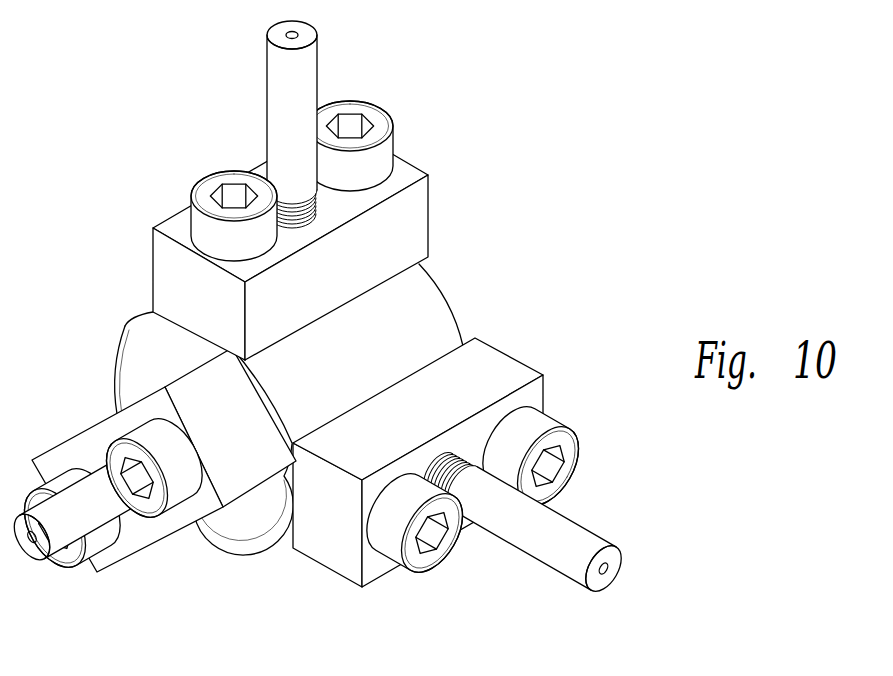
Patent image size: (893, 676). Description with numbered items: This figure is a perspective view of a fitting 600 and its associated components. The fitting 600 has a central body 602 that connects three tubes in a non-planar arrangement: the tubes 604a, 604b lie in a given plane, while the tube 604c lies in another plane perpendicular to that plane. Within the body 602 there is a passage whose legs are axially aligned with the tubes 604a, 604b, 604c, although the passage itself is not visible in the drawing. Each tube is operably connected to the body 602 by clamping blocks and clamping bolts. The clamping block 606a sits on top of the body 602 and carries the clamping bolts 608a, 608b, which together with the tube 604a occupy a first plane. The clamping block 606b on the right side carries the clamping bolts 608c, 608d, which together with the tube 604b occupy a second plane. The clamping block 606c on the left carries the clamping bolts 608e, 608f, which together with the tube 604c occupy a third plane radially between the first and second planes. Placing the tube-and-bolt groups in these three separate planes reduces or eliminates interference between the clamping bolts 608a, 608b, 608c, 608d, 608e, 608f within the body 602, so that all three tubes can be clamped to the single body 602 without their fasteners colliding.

The fitting 600 is at (346, 335).
The body 602 is at (430, 307).
The tube 604a is at (312, 67).
The tube 604b is at (580, 537).
The tube 604c is at (63, 538).
The clamping block 606a is at (158, 272).
The clamping block 606b is at (510, 368).
The clamping block 606c is at (100, 433).
The clamping bolt 608a is at (203, 183).
The clamping bolt 608b is at (383, 125).
The clamping bolt 608c is at (424, 563).
The clamping bolt 608d is at (565, 463).
The clamping bolt 608e is at (35, 493).
The clamping bolt 608f is at (178, 492).